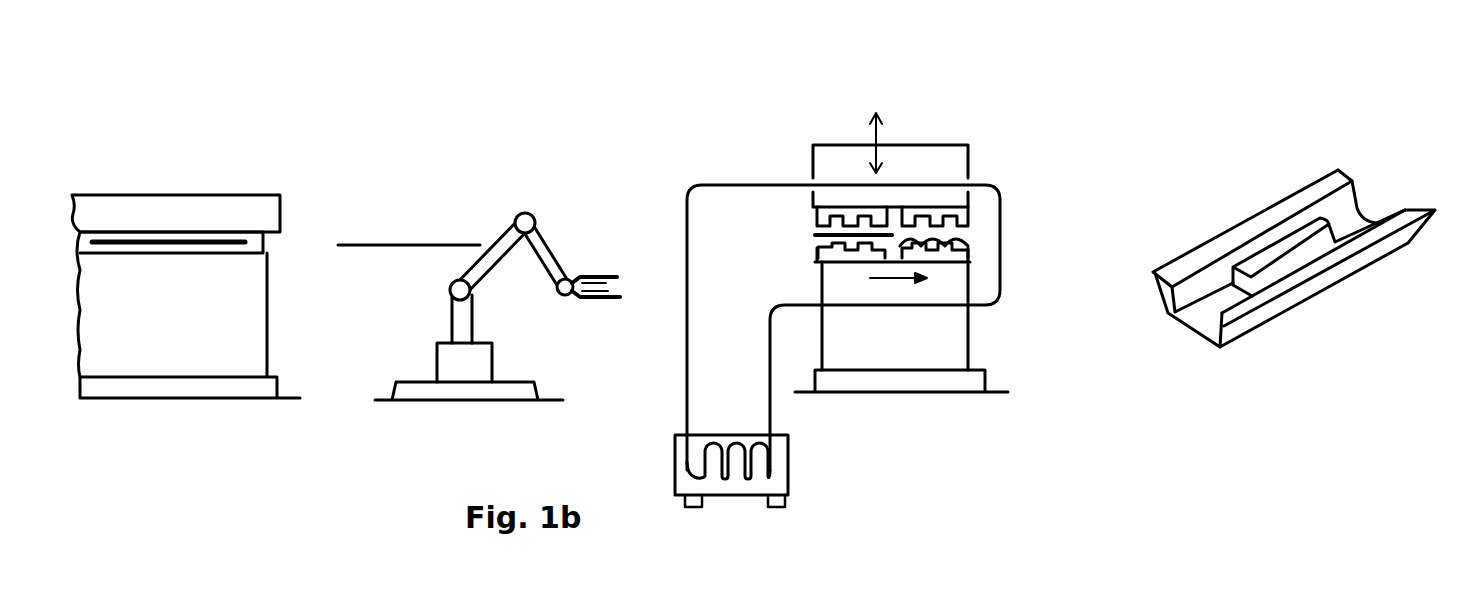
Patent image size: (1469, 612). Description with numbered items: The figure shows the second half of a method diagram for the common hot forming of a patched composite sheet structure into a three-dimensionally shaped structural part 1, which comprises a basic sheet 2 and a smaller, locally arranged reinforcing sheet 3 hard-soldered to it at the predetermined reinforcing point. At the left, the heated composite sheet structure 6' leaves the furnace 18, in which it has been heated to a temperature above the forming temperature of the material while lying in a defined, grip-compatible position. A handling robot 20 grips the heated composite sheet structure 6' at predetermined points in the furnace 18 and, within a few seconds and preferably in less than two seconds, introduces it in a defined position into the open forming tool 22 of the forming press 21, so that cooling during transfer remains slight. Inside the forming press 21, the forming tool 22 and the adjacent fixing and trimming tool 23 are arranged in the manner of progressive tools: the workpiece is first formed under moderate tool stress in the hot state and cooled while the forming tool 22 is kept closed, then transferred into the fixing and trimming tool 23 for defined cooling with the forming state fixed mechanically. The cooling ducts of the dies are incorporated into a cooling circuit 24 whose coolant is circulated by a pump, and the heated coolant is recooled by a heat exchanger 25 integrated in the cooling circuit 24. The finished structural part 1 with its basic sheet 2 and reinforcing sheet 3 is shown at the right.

The structural part 1 is at (1228, 226).
The basic sheet 2 is at (1202, 323).
The reinforcing sheet 3 is at (1293, 240).
The heated composite sheet structure 6' is at (409, 200).
The furnace 18 is at (168, 208).
The handling robot 20 is at (470, 320).
The forming press 21 is at (911, 146).
The forming tool 22 is at (812, 250).
The fixing and trimming tool 23 is at (972, 252).
The cooling circuit 24 is at (922, 307).
The heat exchanger 25 is at (792, 458).